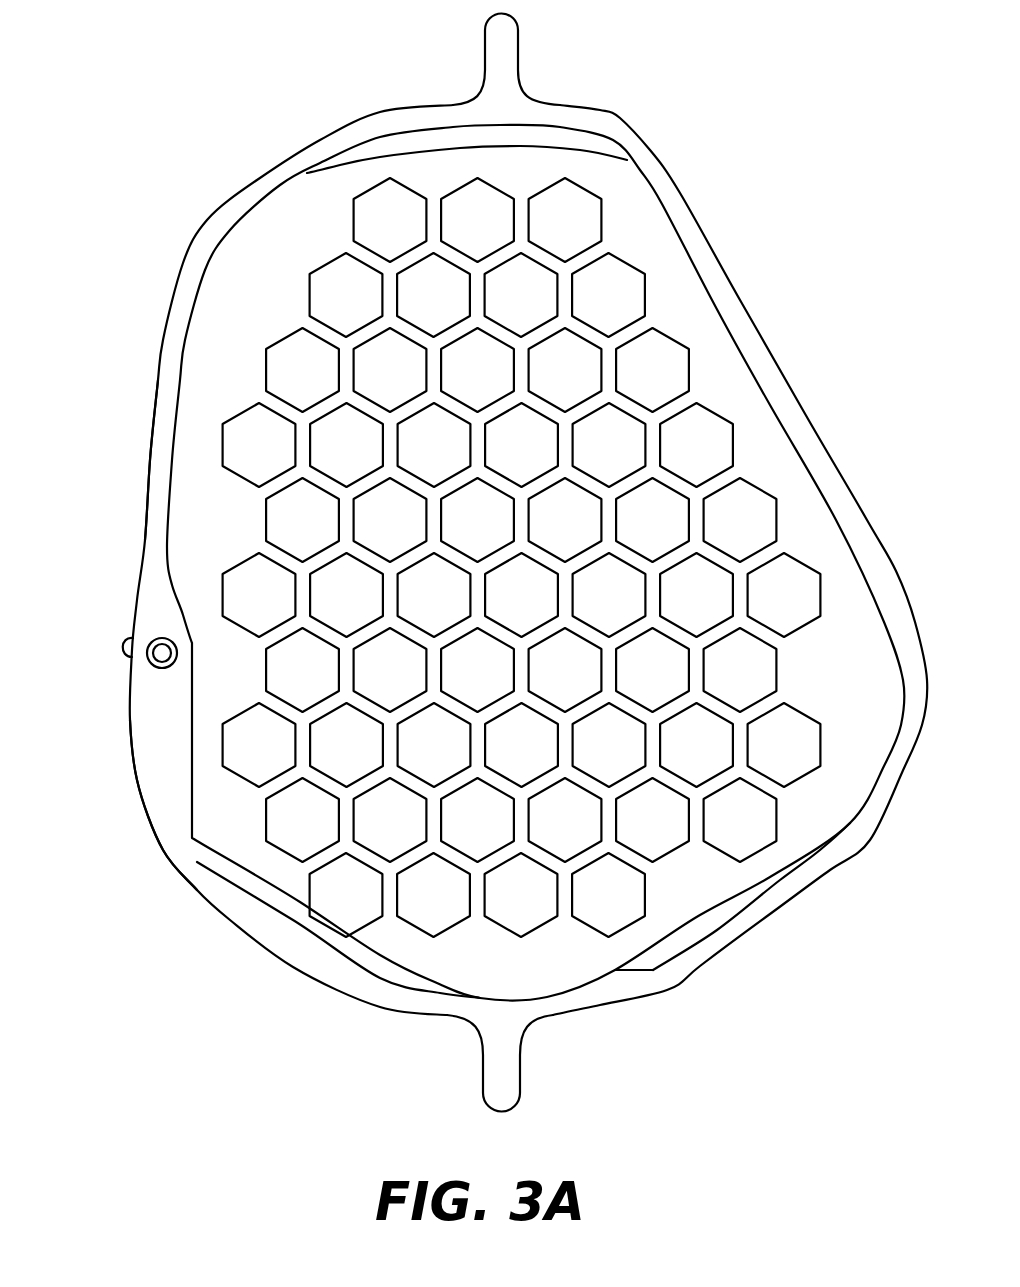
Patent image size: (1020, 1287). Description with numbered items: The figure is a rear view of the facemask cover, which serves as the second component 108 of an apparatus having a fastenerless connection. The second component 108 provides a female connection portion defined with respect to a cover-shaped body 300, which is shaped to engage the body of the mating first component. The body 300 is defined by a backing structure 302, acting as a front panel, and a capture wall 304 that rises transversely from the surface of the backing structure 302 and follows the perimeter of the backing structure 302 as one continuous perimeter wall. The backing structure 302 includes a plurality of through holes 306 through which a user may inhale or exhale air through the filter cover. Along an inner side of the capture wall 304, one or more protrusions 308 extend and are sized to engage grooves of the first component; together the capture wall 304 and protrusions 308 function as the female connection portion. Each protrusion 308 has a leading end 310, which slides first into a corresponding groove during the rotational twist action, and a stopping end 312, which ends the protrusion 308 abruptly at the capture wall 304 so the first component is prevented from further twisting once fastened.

The second component 108 is at (145, 213).
The body 300 is at (152, 423).
The backing structure 302 is at (188, 532).
The capture wall 304 is at (163, 851).
The through holes 306 is at (673, 360).
The protrusions 308 is at (467, 138).
The leading end 310 is at (403, 157).
The stopping end 312 is at (597, 145).